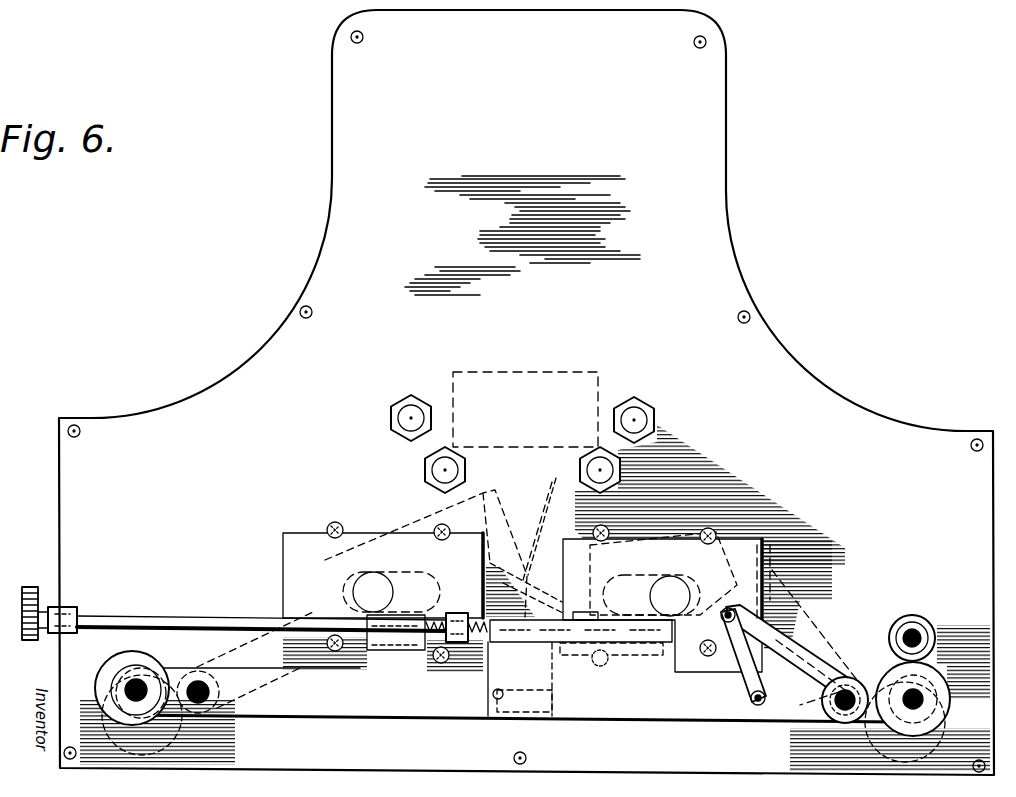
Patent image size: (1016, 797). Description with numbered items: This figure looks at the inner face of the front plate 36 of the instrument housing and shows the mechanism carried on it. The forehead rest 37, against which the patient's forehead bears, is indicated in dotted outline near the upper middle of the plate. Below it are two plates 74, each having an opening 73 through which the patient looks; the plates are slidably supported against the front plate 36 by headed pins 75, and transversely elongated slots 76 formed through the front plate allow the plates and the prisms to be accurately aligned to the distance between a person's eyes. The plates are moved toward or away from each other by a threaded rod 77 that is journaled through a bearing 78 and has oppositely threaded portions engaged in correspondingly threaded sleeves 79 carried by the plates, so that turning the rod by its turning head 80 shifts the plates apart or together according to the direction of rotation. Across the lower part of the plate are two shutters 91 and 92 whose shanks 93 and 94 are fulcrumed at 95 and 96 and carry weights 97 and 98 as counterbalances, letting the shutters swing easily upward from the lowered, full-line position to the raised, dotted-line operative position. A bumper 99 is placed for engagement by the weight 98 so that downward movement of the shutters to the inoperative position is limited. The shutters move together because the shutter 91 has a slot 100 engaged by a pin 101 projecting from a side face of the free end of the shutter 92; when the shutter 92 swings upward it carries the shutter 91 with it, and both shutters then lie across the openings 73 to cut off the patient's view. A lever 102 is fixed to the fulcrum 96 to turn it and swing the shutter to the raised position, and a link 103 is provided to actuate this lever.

The front plate 36 is at (826, 398).
The forehead rest 37 is at (553, 373).
The openings 73 is at (374, 578).
The plates 74 is at (282, 555).
The headed pins 75 is at (437, 526).
The slots 76 is at (432, 578).
The threaded rod 77 is at (205, 615).
The bearing 78 is at (68, 607).
The threaded sleeves 79 is at (455, 611).
The turning head 80 is at (33, 588).
The shutter 91 is at (485, 494).
The shutter 92 is at (550, 492).
The shank 93 is at (293, 712).
The shank 94 is at (738, 718).
The fulcrum 95 is at (198, 680).
The fulcrum 96 is at (832, 716).
The weight 97 is at (112, 675).
The weight 98 is at (940, 680).
The bumper 99 is at (915, 616).
The slot 100 is at (515, 612).
The pin 101 is at (500, 689).
The lever 102 is at (816, 636).
The link 103 is at (745, 665).